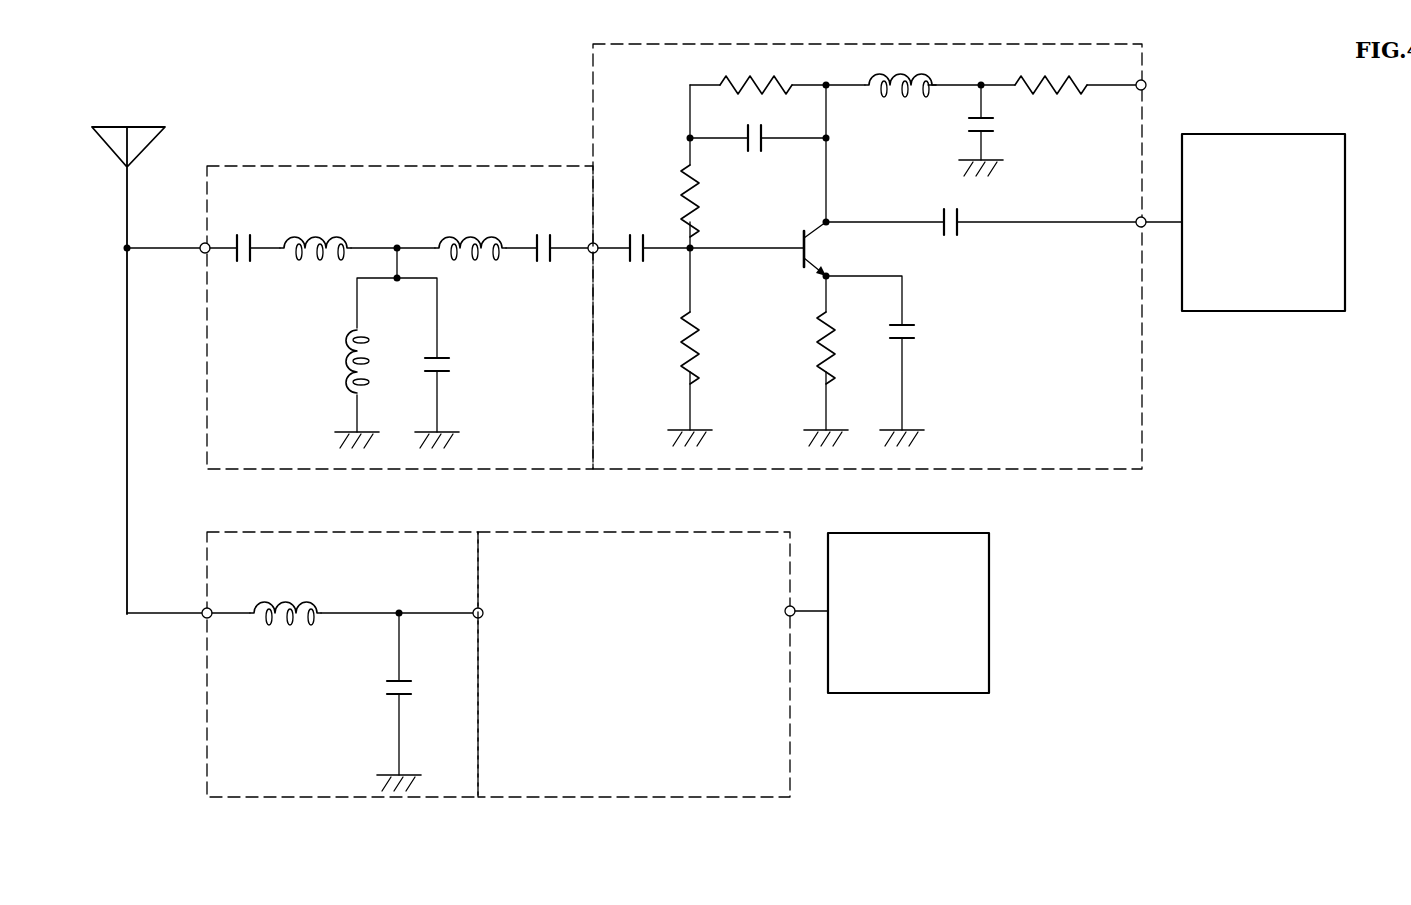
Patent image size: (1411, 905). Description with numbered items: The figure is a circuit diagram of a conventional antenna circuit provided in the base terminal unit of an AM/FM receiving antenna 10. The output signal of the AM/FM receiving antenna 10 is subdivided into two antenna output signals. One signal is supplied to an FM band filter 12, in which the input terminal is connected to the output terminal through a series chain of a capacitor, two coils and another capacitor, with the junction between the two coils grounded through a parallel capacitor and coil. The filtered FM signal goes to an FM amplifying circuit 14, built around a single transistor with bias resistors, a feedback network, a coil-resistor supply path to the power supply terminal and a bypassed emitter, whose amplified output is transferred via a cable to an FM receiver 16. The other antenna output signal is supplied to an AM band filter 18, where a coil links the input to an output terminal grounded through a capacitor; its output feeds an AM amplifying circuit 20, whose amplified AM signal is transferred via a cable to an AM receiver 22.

The AM/FM receiving antenna 10 is at (140, 127).
The FM band filter 12 is at (371, 166).
The FM amplifying circuit 14 is at (593, 88).
The FM receiver 16 is at (1245, 311).
The AM band filter 18 is at (337, 797).
The AM amplifying circuit 20 is at (598, 797).
The AM receiver 22 is at (915, 693).